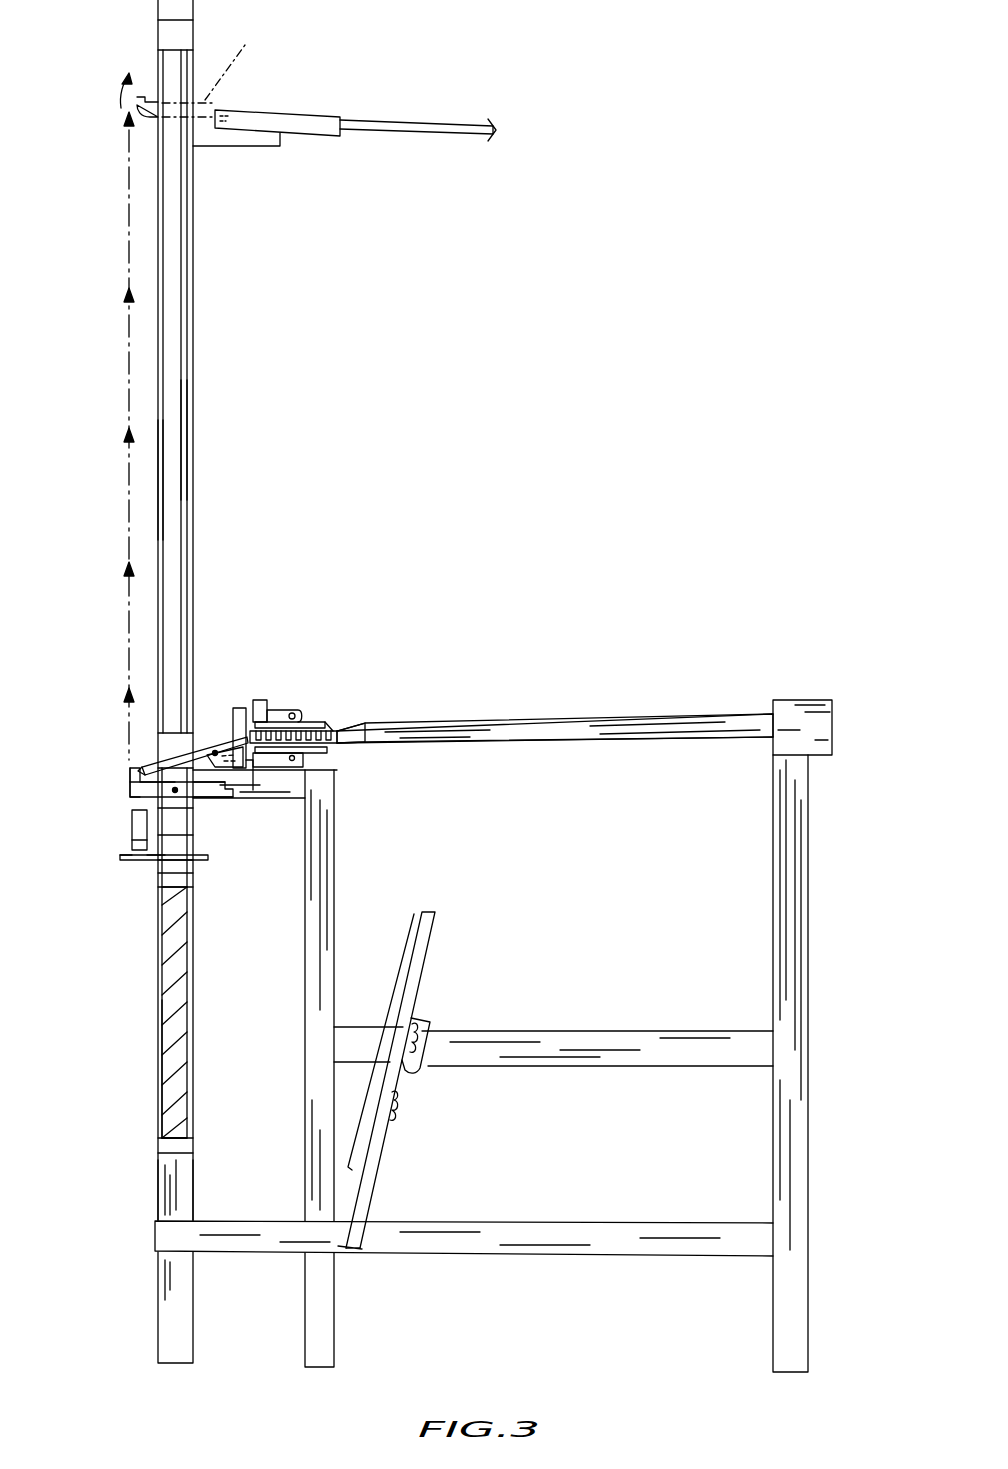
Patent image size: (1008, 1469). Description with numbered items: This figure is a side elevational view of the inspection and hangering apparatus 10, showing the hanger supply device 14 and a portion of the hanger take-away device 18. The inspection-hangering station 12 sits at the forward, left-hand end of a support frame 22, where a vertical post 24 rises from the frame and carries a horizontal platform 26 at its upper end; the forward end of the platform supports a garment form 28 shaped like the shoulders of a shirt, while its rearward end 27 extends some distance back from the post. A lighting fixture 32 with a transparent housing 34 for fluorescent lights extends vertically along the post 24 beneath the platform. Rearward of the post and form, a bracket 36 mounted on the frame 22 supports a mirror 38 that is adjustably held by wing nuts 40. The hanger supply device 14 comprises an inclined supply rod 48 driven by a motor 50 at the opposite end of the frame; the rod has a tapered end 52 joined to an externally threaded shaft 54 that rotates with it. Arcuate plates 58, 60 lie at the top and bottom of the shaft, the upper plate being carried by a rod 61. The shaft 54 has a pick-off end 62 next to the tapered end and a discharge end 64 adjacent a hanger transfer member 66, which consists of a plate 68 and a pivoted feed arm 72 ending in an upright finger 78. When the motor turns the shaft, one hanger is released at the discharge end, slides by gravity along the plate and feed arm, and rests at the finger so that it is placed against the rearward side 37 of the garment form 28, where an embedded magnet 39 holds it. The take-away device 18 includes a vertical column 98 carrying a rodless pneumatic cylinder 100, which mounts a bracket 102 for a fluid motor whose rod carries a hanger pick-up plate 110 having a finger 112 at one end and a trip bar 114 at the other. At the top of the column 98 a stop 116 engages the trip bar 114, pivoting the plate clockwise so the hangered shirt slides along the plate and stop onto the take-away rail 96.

The inspection and hangering apparatus 10 is at (672, 168).
The inspection-hangering station 12 is at (100, 848).
The hanger supply device 14 is at (458, 692).
The hanger take-away device 18 is at (110, 783).
The support frame 22 is at (152, 1271).
The vertical post 24 is at (180, 1190).
The platform 26 is at (150, 862).
The rearward end of platform 27 is at (208, 862).
The garment form 28 is at (130, 826).
The lighting fixture 32 is at (167, 1017).
The transparent housing 34 is at (182, 1078).
The bracket 36 is at (375, 1188).
The rearward side of garment form 37 is at (135, 850).
The mirror 38 is at (415, 935).
The magnet 39 is at (140, 845).
The wing nuts 40 is at (397, 1097).
The supply rod 48 is at (625, 742).
The motor 50 is at (825, 728).
The tapered end 52 is at (362, 744).
The externally threaded shaft 54 is at (315, 722).
The arcuate plate 58 is at (280, 718).
The arcuate plate 60 is at (337, 768).
The rod 61 is at (312, 722).
The pick-off end 62 is at (335, 725).
The discharge end 64 is at (258, 720).
The hanger transfer member 66 is at (217, 722).
The plate 68 is at (252, 770).
The feed arm 72 is at (165, 760).
The finger 78 is at (180, 768).
The take-away rail 96 is at (455, 128).
The vertical column 98 is at (192, 438).
The rodless pneumatic cylinder 100 is at (172, 480).
The bracket 102 is at (173, 731).
The hanger pick-up plate 110 is at (112, 804).
The finger 112 is at (128, 780).
The trip bar 114 is at (222, 800).
The stop 116 is at (275, 112).